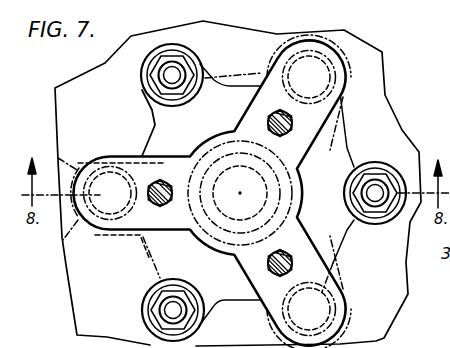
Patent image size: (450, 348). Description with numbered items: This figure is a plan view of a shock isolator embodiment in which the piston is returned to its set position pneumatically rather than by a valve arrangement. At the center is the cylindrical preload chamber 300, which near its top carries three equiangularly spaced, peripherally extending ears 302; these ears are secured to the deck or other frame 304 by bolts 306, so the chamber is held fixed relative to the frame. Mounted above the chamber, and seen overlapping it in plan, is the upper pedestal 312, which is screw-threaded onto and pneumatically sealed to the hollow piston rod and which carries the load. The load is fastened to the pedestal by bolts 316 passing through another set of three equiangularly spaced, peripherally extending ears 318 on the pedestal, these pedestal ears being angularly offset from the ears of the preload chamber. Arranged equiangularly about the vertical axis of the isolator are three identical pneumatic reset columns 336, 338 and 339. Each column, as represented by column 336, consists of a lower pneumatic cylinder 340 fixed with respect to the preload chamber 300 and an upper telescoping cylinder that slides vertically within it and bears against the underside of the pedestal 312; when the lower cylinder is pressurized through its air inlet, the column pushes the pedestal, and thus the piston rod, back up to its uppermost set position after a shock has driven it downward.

The cylindrical preload chamber 300 is at (231, 96).
The ears 302 is at (148, 88).
The frame 304 is at (67, 268).
The bolts 306 is at (172, 62).
The upper pedestal 312 is at (346, 155).
The bolts 316 is at (158, 182).
The ears 318 is at (341, 72).
The pneumatic reset column 336 is at (58, 158).
The pneumatic reset column 338 is at (323, 60).
The pneumatic reset column 339 is at (333, 311).
The lower pneumatic cylinder 340 is at (63, 237).